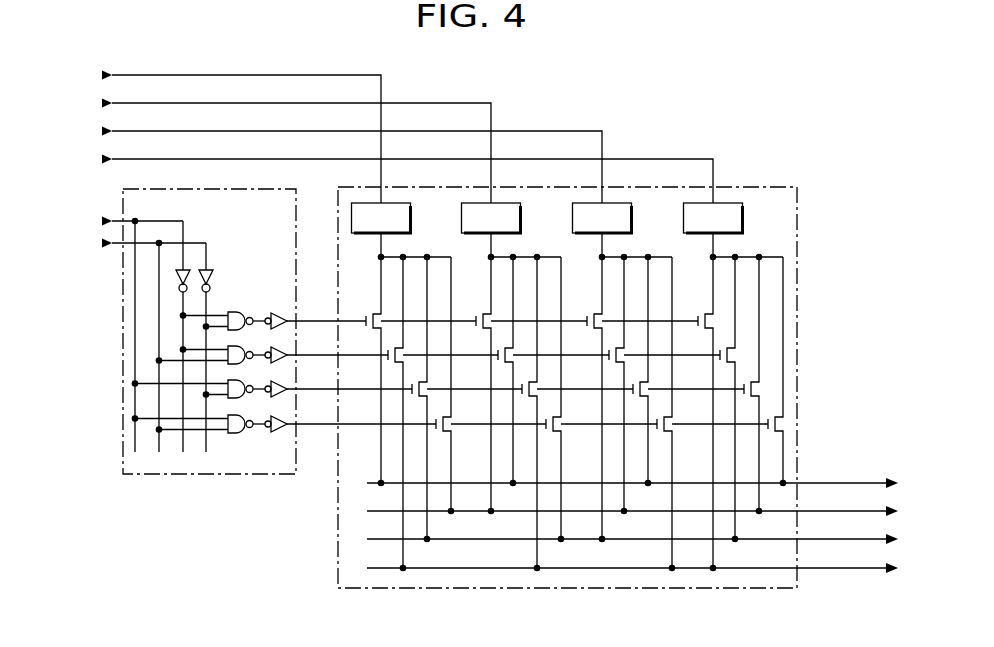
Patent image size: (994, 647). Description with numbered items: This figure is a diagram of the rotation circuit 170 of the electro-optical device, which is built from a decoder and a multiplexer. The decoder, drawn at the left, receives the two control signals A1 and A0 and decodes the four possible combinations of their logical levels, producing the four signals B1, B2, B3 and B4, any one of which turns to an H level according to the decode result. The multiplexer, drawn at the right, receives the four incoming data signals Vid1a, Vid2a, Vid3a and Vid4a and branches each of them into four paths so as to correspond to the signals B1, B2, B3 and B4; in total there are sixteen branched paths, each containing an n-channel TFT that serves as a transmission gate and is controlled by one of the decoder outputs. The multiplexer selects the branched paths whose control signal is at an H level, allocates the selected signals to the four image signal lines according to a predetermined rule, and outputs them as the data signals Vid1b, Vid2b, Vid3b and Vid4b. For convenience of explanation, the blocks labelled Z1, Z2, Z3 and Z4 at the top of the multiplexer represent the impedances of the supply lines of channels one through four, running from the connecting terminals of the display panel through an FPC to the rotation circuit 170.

The rotation circuit 170 is at (678, 90).
The data signal Vid1a is at (208, 132).
The data signal Vid2a is at (263, 146).
The data signal Vid3a is at (318, 160).
The data signal Vid4a is at (374, 174).
The control signal A1 is at (125, 330).
The control signal A0 is at (136, 341).
The decoder output signal B1 is at (440, 312).
The decoder output signal B2 is at (439, 346).
The decoder output signal B3 is at (439, 380).
The decoder output signal B4 is at (451, 415).
The supply line impedance Z1 is at (403, 387).
The supply line impedance Z2 is at (513, 387).
The supply line impedance Z3 is at (624, 387).
The supply line impedance Z4 is at (735, 387).
The data signal Vid1b is at (632, 473).
The data signal Vid2b is at (632, 501).
The data signal Vid3b is at (632, 529).
The data signal Vid4b is at (632, 558).